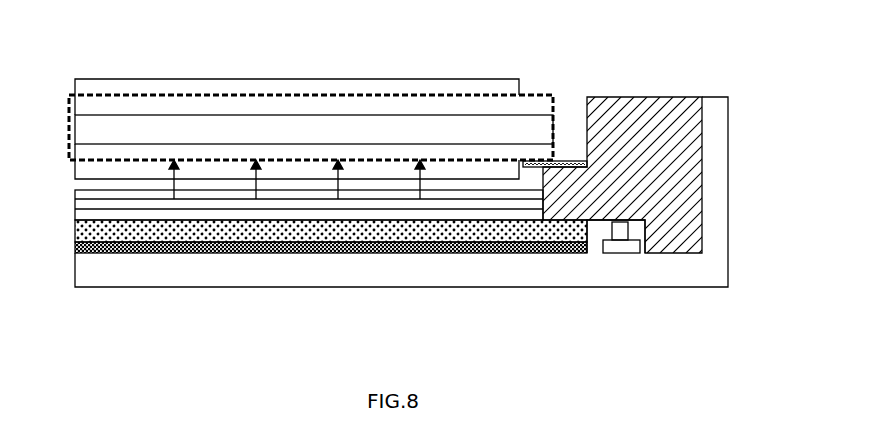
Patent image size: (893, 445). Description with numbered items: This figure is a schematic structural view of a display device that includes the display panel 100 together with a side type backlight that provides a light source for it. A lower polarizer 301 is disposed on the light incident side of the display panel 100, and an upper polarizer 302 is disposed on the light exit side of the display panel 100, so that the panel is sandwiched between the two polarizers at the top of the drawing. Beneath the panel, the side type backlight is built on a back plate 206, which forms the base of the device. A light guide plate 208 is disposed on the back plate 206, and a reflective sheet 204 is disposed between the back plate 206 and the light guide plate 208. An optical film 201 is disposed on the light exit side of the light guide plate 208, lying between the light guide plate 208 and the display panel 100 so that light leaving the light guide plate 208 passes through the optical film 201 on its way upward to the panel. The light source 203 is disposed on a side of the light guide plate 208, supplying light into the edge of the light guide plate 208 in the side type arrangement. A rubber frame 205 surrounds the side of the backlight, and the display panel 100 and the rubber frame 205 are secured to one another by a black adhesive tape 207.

The display panel 100 is at (317, 90).
The lower polarizer 301 is at (362, 170).
The upper polarizer 302 is at (467, 90).
The optical film 201 is at (203, 195).
The light guide plate 208 is at (277, 232).
The reflective sheet 204 is at (332, 248).
The back plate 206 is at (460, 263).
The rubber frame 205 is at (681, 107).
The black adhesive tape 207 is at (568, 158).
The light source 203 is at (623, 240).